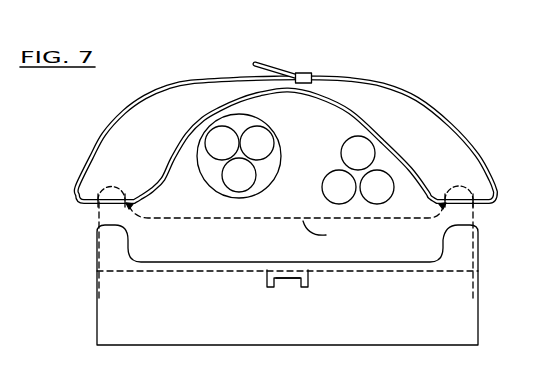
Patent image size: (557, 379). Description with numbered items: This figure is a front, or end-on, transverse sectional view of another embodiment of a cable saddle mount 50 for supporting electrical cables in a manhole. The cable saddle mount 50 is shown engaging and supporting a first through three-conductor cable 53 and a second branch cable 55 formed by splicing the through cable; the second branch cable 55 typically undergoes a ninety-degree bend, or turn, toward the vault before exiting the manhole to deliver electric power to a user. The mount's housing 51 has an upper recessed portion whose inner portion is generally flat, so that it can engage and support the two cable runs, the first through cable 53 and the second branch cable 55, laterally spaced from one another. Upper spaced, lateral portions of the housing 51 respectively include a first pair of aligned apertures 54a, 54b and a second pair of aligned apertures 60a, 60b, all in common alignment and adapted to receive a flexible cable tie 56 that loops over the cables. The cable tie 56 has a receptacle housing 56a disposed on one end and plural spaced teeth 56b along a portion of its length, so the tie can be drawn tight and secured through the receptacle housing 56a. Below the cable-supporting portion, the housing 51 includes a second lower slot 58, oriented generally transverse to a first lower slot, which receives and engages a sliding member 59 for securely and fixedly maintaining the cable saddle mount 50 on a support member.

The cable saddle mount 50 is at (70, 236).
The housing 51 is at (92, 259).
The first through 3/c cable 53 is at (263, 124).
The aperture of first pair of aligned apertures 54a is at (97, 204).
The aperture of first pair of aligned apertures 54b is at (127, 193).
The second branch cable 55 is at (341, 165).
The flexible cable tie 56 is at (388, 72).
The receptacle housing 56a is at (298, 72).
The spaced teeth 56b is at (375, 81).
The second lower slot 58 is at (267, 282).
The sliding member 59 is at (289, 275).
The aperture of second pair of aligned apertures 60a is at (474, 194).
The aperture of second pair of aligned apertures 60b is at (445, 193).